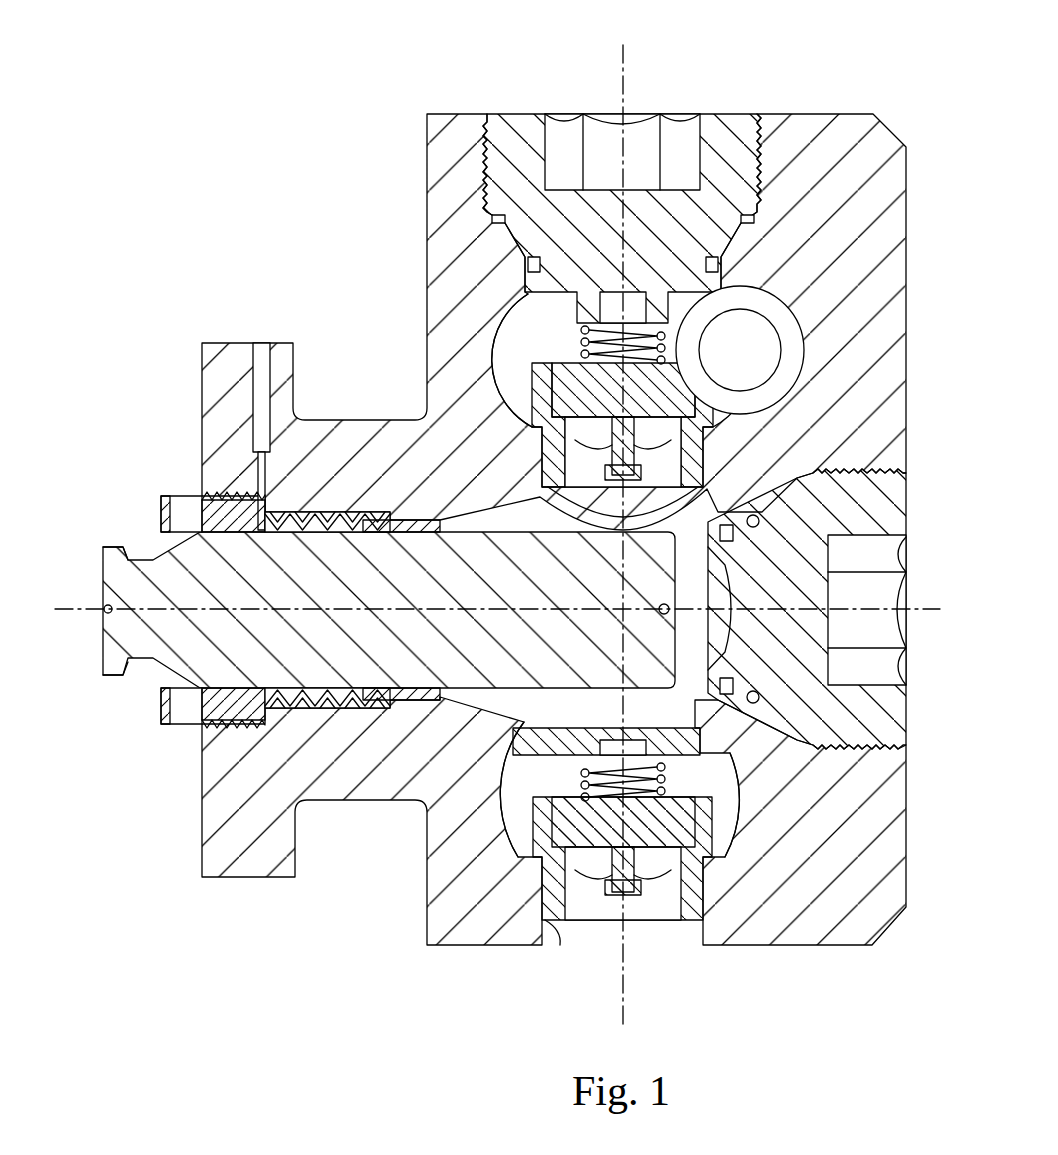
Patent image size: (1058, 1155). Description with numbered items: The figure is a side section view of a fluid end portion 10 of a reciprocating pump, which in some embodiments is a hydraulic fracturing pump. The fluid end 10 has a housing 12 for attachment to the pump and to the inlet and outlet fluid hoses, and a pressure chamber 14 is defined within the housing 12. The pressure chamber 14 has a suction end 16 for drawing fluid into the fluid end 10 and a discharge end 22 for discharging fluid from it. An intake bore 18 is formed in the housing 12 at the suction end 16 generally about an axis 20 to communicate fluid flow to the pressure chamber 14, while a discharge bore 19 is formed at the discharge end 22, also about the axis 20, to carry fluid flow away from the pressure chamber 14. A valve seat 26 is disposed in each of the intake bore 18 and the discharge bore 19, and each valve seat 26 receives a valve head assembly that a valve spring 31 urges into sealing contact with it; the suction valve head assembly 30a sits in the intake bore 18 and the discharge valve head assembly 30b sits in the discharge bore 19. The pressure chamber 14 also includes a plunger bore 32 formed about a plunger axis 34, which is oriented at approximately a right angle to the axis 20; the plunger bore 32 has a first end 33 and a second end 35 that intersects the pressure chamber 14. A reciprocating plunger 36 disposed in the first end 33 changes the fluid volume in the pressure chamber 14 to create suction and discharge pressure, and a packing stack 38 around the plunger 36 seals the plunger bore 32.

The fluid end portion 10 is at (832, 66).
The housing 12 is at (897, 838).
The pressure chamber 14 is at (720, 580).
The suction end 16 is at (647, 950).
The intake bore 18 is at (562, 946).
The discharge bore 19 is at (700, 473).
The axis 20 is at (623, 1010).
The discharge end 22 is at (522, 355).
The valve seat 26 is at (538, 442).
The suction valve head assembly 30a is at (693, 791).
The discharge valve head assembly 30b is at (688, 354).
The valve spring 31 is at (588, 340).
The plunger bore 32 is at (440, 524).
The first end 33 is at (158, 518).
The plunger axis 34 is at (75, 612).
The second end 35 is at (425, 688).
The reciprocating plunger 36 is at (104, 562).
The packing stack 38 is at (300, 710).